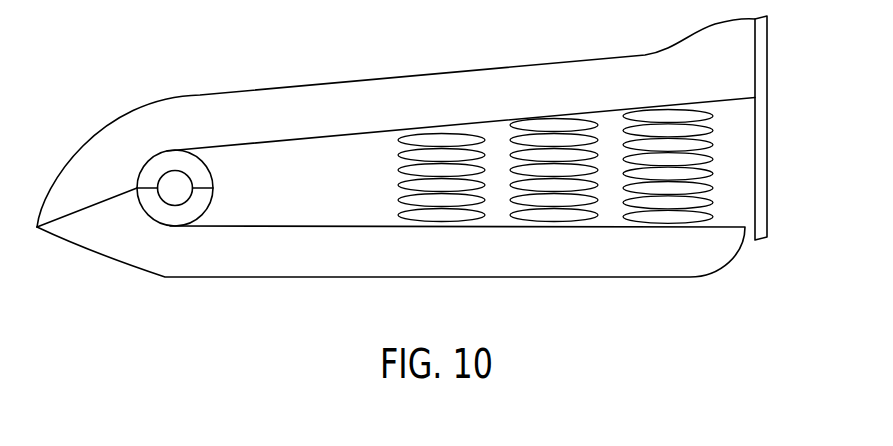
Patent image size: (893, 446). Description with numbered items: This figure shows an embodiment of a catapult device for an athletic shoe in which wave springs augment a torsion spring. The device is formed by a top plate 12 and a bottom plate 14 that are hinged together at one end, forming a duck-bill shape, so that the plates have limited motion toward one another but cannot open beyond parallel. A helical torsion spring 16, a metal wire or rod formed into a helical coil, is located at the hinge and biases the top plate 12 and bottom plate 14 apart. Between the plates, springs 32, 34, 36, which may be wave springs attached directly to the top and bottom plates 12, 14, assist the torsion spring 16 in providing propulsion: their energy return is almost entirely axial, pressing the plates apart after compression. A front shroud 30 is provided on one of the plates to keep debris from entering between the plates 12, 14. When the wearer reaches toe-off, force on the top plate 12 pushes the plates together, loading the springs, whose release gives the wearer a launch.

The top plate 12 is at (203, 110).
The bottom plate 14 is at (408, 268).
The helical torsion spring 16 is at (160, 208).
The front shroud 30 is at (762, 160).
The spring 32 is at (455, 132).
The spring 34 is at (565, 120).
The spring 36 is at (672, 110).